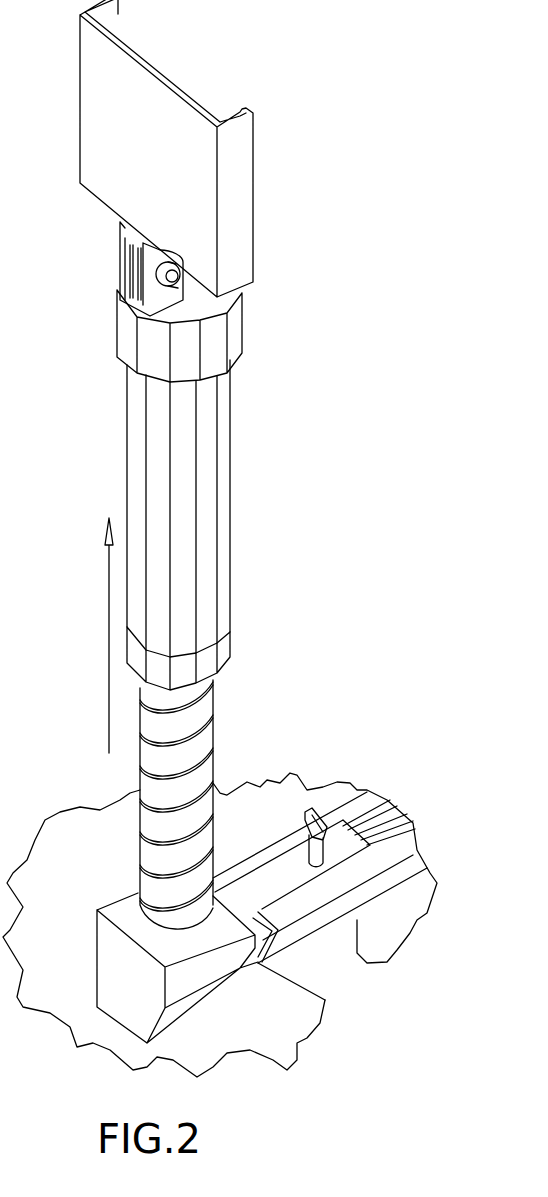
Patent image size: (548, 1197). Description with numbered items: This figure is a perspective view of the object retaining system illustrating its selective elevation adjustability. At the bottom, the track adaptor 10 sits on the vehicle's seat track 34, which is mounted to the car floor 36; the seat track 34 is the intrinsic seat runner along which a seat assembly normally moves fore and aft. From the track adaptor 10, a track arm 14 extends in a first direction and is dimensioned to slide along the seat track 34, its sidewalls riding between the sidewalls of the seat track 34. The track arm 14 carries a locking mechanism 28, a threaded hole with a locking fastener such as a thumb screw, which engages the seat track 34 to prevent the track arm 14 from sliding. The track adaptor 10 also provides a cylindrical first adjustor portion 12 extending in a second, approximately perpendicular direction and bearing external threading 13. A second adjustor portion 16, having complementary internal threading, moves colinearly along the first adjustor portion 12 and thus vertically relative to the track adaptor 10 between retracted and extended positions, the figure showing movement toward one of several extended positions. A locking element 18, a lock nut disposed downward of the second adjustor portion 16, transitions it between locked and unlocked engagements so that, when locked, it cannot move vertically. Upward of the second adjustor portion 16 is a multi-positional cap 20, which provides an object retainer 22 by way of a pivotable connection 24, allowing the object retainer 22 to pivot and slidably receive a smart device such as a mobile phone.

The track adaptor 10 is at (108, 945).
The first adjustor portion 12 is at (152, 820).
The external threading 13 is at (213, 742).
The track arm 14 is at (267, 873).
The second adjustor portion 16 is at (227, 560).
The locking element 18 is at (227, 653).
The multi-positional cap 20 is at (237, 337).
The object retainer 22 is at (247, 172).
The pivotable connection 24 is at (123, 265).
The locking mechanism 28 is at (320, 817).
The seat track 34 is at (328, 974).
The car floor 36 is at (331, 985).